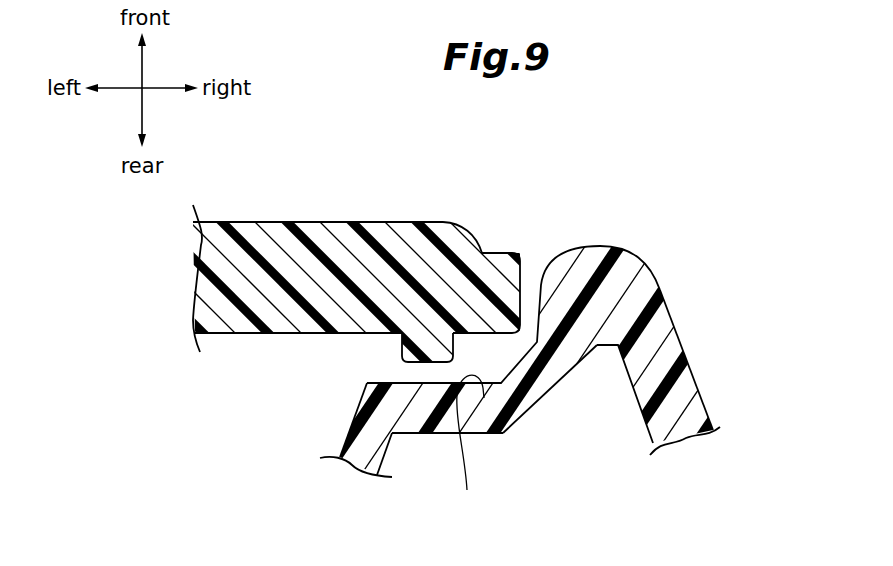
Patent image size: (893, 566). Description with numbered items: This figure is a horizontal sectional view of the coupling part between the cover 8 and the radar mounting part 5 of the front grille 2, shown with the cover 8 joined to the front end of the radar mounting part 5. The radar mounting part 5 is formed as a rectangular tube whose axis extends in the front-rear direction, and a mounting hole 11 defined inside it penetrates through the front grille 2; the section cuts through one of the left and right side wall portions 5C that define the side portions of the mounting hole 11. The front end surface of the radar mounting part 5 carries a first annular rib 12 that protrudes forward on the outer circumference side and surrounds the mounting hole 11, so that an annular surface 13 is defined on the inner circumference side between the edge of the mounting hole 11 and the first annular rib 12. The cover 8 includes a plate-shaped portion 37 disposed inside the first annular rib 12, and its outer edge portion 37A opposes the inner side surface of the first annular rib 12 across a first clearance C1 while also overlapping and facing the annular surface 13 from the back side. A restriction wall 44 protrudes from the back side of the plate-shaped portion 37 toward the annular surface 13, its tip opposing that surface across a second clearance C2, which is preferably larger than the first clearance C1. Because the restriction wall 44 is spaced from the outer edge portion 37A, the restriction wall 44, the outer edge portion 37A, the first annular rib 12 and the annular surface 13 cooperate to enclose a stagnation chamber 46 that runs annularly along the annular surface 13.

The front grille 2 is at (551, 351).
The radar mounting part 5 is at (551, 351).
The side wall portion 5C is at (375, 456).
The cover 8 is at (399, 275).
The mounting hole 11 is at (340, 422).
The first annular rib 12 is at (600, 252).
The annular surface 13 is at (467, 446).
The plate-shaped portion 37 is at (248, 233).
The outer edge portion 37A is at (455, 232).
The restriction wall 44 is at (413, 343).
The stagnation chamber 46 is at (487, 357).
The first clearance C1 is at (530, 300).
The second clearance C2 is at (427, 373).